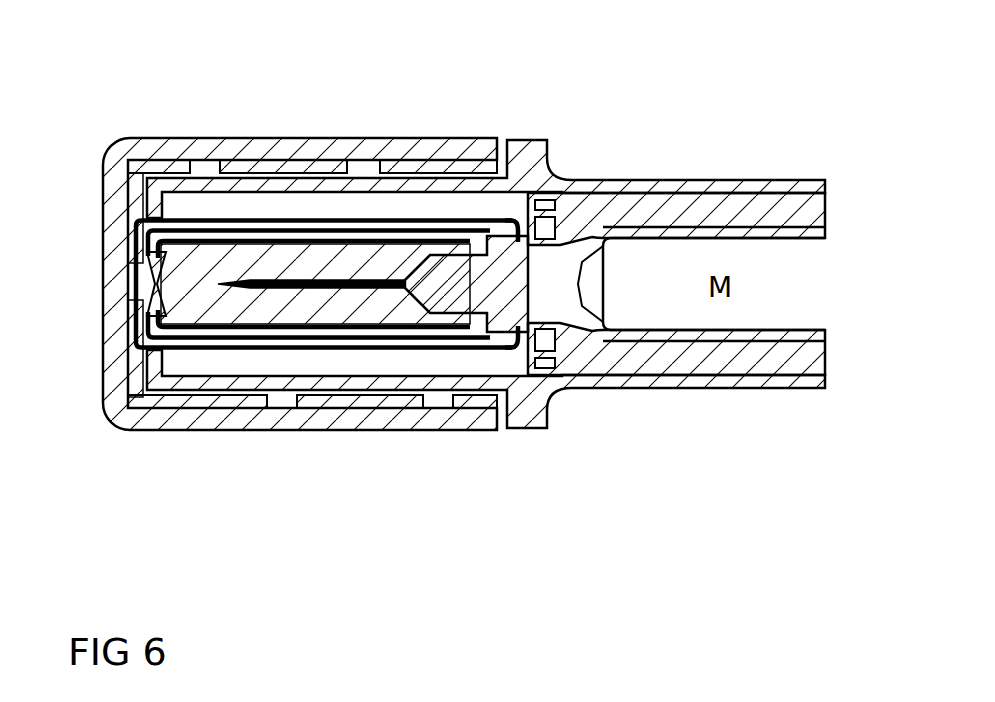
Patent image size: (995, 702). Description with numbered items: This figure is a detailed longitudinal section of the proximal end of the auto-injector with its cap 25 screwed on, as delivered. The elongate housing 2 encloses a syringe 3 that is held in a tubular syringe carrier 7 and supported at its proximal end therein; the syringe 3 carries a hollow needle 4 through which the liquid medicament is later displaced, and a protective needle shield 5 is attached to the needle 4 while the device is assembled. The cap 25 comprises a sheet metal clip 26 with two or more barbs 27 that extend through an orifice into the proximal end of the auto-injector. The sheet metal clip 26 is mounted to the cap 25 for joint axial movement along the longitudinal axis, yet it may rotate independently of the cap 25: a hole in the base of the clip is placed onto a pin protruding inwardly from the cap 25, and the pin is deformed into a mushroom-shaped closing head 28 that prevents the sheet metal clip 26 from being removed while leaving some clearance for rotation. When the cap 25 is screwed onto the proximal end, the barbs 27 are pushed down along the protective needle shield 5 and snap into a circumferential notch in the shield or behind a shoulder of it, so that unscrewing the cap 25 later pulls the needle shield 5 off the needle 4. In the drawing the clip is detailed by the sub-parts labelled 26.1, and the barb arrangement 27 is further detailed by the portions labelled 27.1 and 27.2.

The housing 2 is at (785, 184).
The syringe 3 is at (663, 338).
The hollow needle 4 is at (318, 282).
The protective needle shield 5 is at (342, 252).
The tubular syringe carrier 7 is at (707, 190).
The cap 25 is at (170, 140).
The sheet metal clip 26 is at (448, 553).
The housing shell 26.1 is at (168, 432).
The barbs 27 is at (497, 80).
The latching element 27.1 is at (386, 165).
The latching recess 27.2 is at (505, 232).
The mushroom-shaped closing head 28 is at (150, 288).